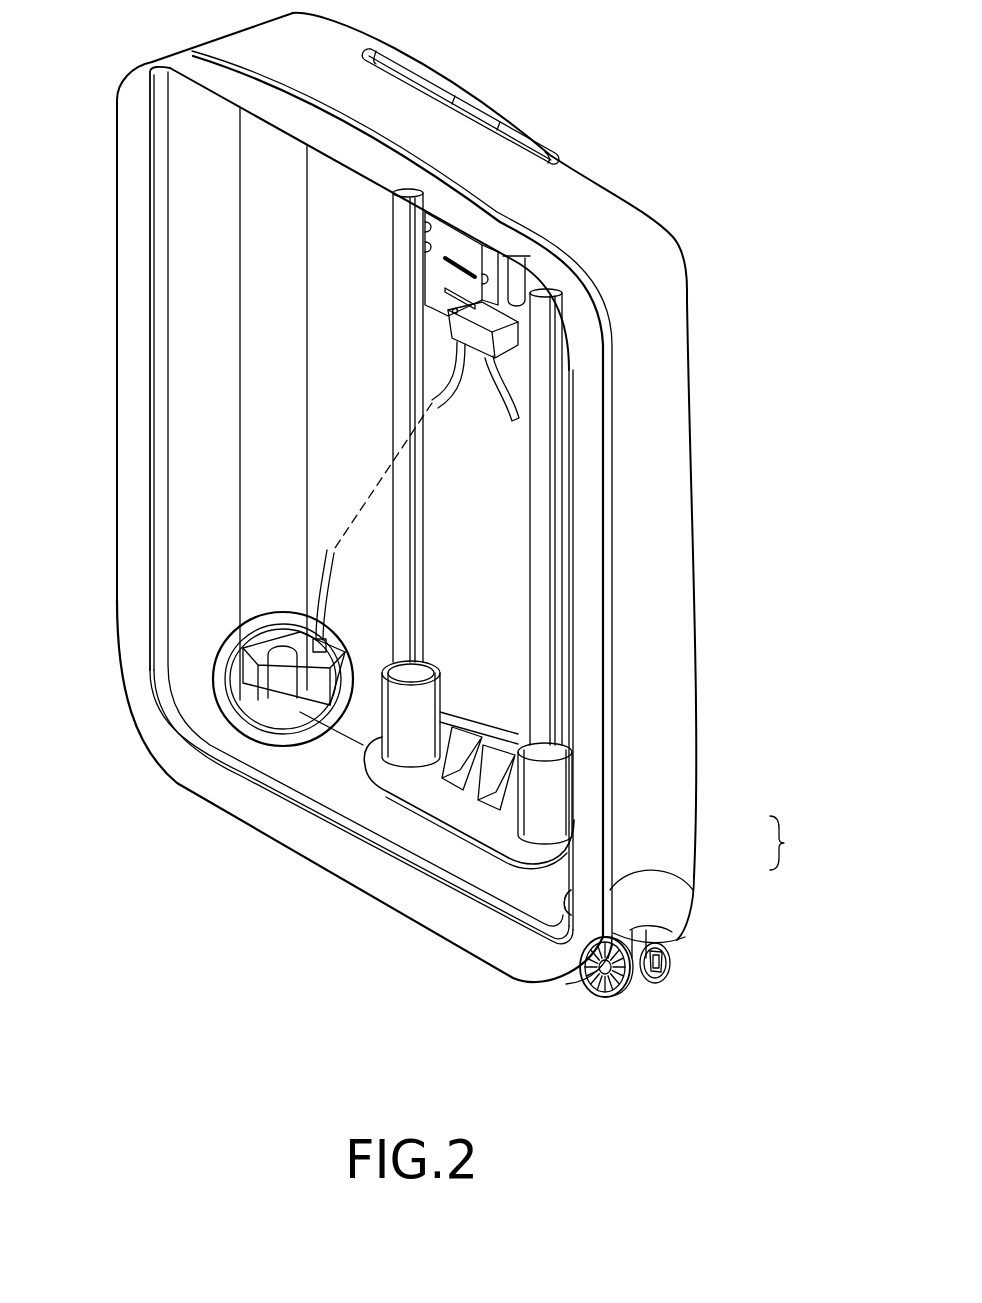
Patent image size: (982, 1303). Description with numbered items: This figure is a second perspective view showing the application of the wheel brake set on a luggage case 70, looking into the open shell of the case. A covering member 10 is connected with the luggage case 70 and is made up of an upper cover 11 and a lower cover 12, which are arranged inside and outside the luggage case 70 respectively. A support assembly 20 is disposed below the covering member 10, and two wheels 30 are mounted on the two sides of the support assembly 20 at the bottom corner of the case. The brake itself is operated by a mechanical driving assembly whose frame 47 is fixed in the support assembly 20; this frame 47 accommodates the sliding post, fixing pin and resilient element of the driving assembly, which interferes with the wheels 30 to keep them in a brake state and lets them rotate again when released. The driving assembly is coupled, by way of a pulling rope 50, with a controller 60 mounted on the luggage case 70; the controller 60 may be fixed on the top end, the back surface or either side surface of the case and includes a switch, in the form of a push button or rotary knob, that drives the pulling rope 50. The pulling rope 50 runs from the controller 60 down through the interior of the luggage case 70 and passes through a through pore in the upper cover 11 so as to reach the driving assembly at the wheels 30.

The covering member 10 is at (793, 843).
The upper cover 11 is at (221, 683).
The lower cover 12 is at (675, 910).
The support assembly 20 is at (670, 940).
The wheel 30 is at (660, 992).
The frame 47 is at (672, 960).
The pulling rope 50 is at (460, 362).
The controller 60 is at (468, 253).
The luggage case 70 is at (686, 333).